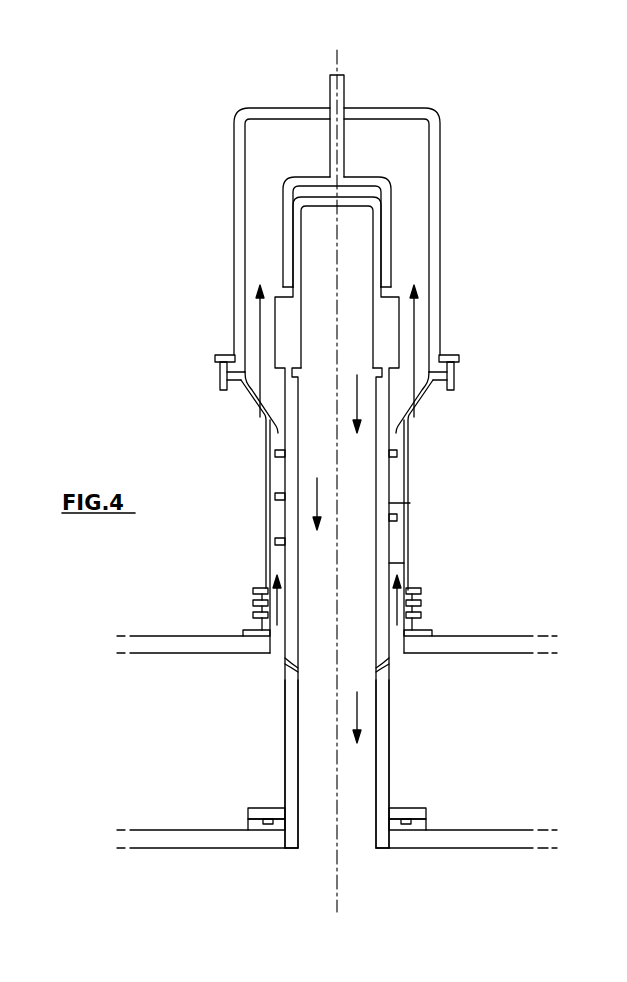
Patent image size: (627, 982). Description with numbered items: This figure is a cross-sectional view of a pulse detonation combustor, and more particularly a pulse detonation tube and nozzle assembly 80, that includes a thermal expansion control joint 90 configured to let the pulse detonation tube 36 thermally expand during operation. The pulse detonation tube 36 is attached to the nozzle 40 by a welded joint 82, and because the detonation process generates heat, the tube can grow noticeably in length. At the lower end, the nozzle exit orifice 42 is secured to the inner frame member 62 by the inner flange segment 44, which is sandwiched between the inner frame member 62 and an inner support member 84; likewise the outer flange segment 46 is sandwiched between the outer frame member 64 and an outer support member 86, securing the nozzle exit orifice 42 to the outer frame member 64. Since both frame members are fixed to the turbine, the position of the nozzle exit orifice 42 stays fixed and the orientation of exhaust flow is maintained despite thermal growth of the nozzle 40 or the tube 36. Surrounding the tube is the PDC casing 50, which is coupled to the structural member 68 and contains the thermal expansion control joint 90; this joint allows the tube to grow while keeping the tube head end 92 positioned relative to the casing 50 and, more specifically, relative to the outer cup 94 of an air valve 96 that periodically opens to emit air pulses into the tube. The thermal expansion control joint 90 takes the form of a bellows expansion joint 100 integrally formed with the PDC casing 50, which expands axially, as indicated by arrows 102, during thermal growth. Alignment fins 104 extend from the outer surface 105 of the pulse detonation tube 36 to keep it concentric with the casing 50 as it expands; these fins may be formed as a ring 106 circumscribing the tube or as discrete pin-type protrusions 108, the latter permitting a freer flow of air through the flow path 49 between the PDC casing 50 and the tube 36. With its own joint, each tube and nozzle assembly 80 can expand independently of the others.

The pulse detonation tube and nozzle assembly 80 is at (540, 312).
The tube head end 92 is at (405, 166).
The air valve 96 is at (270, 197).
The outer cup 94 is at (391, 215).
The pulse detonation tube 36 is at (412, 503).
The flow path 49 is at (398, 483).
The outer surface 105 is at (407, 562).
The ring 106 is at (280, 452).
The pin-type protrusions 108 is at (280, 496).
The PDC casing 50 is at (266, 530).
The alignment fins 104 is at (398, 453).
The arrows 102 is at (233, 572).
The bellows expansion joint 100 is at (424, 590).
The structural member 68 is at (525, 636).
The thermal expansion control joint 90 is at (437, 610).
The welded joint 82 is at (385, 662).
The nozzle 40 is at (378, 740).
The nozzle exit orifice 42 is at (383, 838).
The outer support member 86 is at (262, 808).
The outer flange segment 46 is at (258, 827).
The inner support member 84 is at (412, 808).
The inner flange segment 44 is at (422, 827).
The outer frame member 64 is at (246, 840).
The inner frame member 62 is at (468, 842).